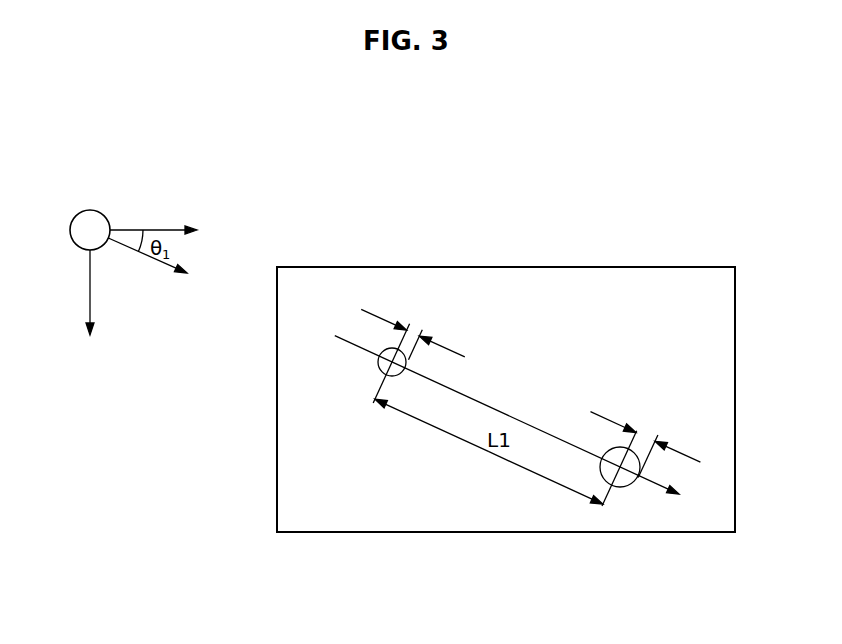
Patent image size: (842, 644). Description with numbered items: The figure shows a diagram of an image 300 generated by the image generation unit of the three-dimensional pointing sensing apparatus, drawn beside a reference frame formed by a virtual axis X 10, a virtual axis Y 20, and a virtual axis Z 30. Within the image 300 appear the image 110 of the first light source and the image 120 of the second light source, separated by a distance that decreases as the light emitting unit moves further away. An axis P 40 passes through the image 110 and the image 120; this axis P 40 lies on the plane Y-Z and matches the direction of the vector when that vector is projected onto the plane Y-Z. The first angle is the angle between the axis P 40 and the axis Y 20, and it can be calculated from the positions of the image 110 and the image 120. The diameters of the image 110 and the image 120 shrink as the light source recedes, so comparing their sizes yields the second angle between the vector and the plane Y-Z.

The virtual axis X 10 is at (89, 180).
The virtual axis Y 20 is at (213, 217).
The virtual axis Z 30 is at (90, 363).
The axis P 40 is at (197, 290).
The image 300 is at (505, 267).
The image of the first light source 110 is at (377, 368).
The image of the second light source 120 is at (633, 483).